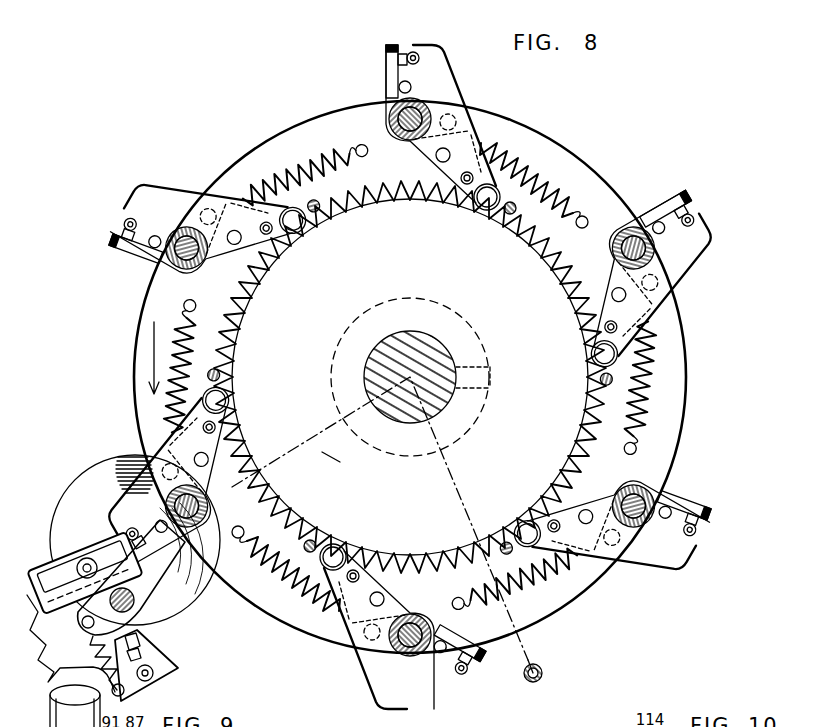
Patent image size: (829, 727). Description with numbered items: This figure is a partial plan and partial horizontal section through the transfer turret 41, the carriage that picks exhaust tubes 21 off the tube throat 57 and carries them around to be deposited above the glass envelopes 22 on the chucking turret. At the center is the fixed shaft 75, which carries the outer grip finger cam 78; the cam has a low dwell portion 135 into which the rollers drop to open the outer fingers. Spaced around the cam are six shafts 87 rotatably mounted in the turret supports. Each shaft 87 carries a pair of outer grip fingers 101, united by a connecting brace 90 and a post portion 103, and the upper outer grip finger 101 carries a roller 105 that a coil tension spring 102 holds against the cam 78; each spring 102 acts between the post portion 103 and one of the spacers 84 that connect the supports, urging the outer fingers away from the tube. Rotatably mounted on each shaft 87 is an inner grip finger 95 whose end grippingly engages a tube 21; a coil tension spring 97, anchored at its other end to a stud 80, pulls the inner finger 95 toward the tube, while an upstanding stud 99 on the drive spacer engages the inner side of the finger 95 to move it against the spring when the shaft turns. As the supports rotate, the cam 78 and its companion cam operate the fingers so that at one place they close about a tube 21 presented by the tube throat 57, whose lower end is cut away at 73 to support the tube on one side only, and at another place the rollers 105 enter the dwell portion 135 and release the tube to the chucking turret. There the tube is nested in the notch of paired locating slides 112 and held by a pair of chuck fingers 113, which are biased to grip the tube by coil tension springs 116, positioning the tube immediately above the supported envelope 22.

The transfer turret 41 is at (699, 323).
The coil tension spring 102 is at (370, 205).
The outer grip finger cam 78 is at (250, 343).
The shaft 75 is at (418, 345).
The low dwell portion 135 is at (326, 462).
The outer grip finger 101 is at (441, 48).
The shaft 87 is at (397, 133).
The inner grip finger 95 is at (392, 44).
The glass exhaust tube 21 is at (413, 51).
The upstanding stud 99 is at (399, 87).
The roller 105 is at (300, 228).
The spacer 84 is at (317, 214).
The post portion 103 is at (272, 235).
The connecting brace 90 is at (436, 156).
The stud 80 is at (362, 146).
The coil tension spring 97 is at (297, 165).
The glass envelope 22 is at (130, 455).
The locating plate or slide 112 is at (56, 555).
The chuck finger 113 is at (172, 647).
The coil tension spring 116 is at (93, 651).
The cut-away portion 73 is at (540, 667).
The tube throat 57 is at (530, 683).